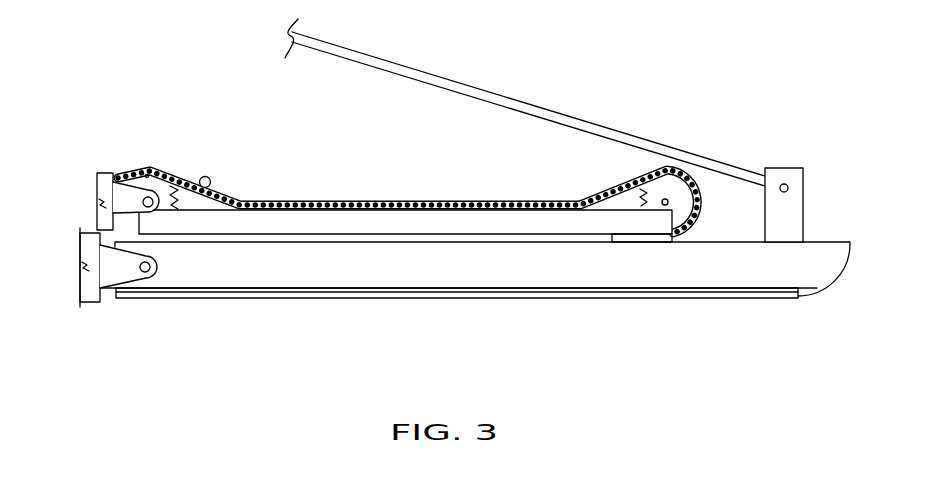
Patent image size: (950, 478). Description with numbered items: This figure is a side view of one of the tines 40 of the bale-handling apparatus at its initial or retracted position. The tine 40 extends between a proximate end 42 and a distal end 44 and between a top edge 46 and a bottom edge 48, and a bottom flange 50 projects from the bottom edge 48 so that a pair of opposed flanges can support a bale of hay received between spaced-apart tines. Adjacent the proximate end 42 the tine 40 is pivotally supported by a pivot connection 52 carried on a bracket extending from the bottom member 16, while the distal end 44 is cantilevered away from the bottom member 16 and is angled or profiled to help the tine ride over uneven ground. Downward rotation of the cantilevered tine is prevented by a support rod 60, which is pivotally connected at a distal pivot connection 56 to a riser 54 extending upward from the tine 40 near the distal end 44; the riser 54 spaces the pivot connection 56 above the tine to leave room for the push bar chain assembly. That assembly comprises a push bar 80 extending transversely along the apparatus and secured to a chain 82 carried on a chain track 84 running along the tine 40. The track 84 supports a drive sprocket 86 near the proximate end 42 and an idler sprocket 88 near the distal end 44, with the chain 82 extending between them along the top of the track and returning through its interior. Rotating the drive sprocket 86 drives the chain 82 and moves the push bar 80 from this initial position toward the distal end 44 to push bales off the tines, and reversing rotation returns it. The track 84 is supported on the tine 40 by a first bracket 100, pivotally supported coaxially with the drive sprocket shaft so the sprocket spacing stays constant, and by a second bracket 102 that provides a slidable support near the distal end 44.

The bottom member 16 is at (88, 277).
The tine 40 is at (672, 276).
The proximate end 42 is at (128, 242).
The distal end 44 is at (850, 243).
The top edge 46 is at (722, 242).
The bottom edge 48 is at (512, 298).
The bottom flange 50 is at (773, 292).
The pivot connection 52 is at (148, 283).
The riser 54 is at (793, 207).
The pivot connection 56 is at (786, 183).
The support rod 60 is at (530, 105).
The push bar 80 is at (206, 177).
The chain 82 is at (318, 206).
The chain track 84 is at (443, 227).
The drive sprocket 86 is at (143, 174).
The idler sprocket 88 is at (667, 188).
The first bracket 100 is at (122, 197).
The second bracket 102 is at (633, 243).